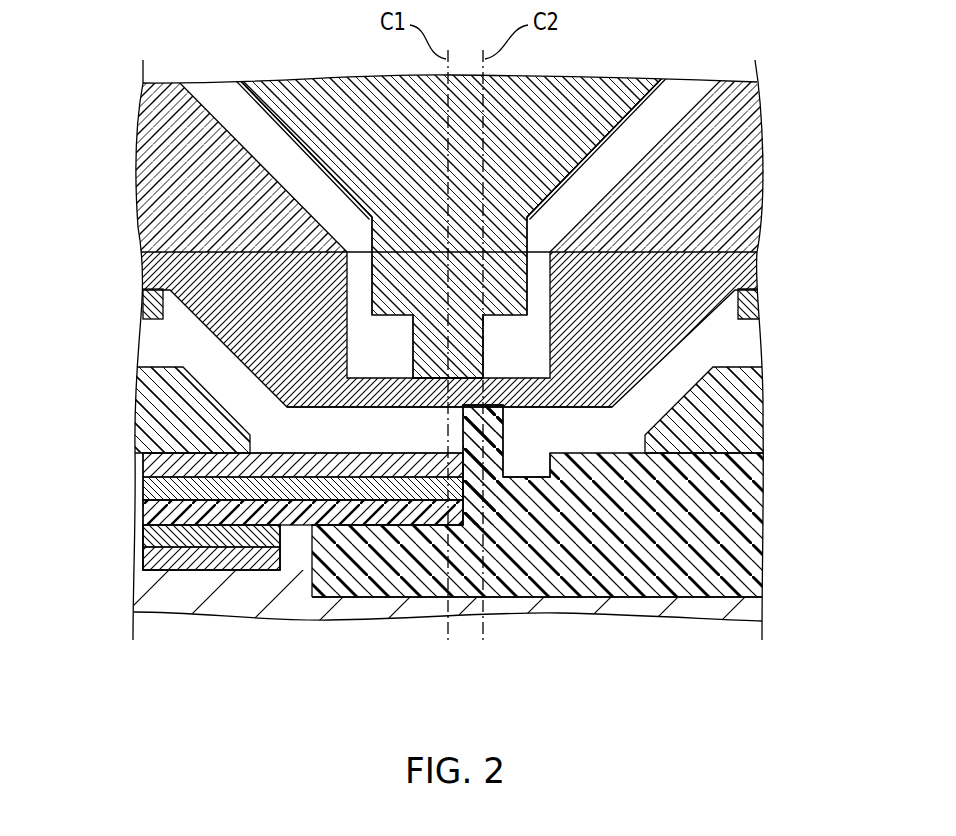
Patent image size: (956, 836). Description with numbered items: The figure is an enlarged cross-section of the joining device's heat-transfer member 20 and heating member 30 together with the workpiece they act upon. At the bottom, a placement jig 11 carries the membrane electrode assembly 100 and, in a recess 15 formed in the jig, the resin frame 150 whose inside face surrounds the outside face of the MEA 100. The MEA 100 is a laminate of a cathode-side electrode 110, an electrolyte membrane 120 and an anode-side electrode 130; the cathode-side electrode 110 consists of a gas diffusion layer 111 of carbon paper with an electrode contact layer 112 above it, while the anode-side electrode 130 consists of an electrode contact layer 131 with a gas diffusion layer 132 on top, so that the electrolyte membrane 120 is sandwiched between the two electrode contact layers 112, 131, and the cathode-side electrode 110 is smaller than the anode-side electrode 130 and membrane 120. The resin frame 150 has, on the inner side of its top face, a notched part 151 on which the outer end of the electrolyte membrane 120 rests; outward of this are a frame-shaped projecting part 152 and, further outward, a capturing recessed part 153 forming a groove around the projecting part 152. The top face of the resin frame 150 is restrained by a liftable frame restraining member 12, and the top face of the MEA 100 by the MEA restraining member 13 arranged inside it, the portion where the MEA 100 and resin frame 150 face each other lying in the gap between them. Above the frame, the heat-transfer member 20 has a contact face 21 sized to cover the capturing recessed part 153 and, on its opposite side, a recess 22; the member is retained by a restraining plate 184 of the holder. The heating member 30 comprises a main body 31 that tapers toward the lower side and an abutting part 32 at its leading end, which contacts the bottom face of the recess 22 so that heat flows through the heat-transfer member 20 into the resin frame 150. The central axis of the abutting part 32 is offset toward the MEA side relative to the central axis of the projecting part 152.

The placement jig 11 is at (152, 603).
The frame restraining member 12 is at (734, 374).
The MEA restraining member 13 is at (165, 385).
The recess 15 is at (683, 597).
The heat-transfer member 20 is at (678, 280).
The contact face 21 is at (373, 408).
The recess 22 is at (542, 270).
The heating member 30 is at (86, 138).
The main body 31 is at (392, 165).
The abutting part 32 is at (428, 348).
The membrane electrode assembly 100 is at (223, 585).
The cathode-side electrode 110 is at (345, 665).
The gas diffusion layer 111 is at (258, 568).
The electrode contact layer 112 is at (285, 543).
The electrolyte membrane 120 is at (202, 513).
The anode-side electrode 130 is at (113, 430).
The electrode contact layer 131 is at (150, 490).
The gas diffusion layer 132 is at (152, 473).
The resin frame 150 is at (642, 610).
The notched part 151 is at (425, 516).
The projecting part 152 is at (488, 425).
The capturing recessed part 153 is at (533, 474).
The restraining plate 184 is at (146, 298).